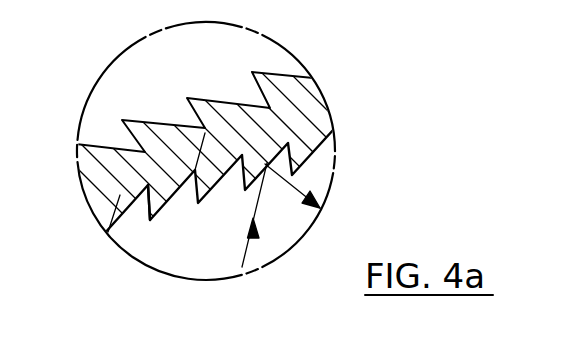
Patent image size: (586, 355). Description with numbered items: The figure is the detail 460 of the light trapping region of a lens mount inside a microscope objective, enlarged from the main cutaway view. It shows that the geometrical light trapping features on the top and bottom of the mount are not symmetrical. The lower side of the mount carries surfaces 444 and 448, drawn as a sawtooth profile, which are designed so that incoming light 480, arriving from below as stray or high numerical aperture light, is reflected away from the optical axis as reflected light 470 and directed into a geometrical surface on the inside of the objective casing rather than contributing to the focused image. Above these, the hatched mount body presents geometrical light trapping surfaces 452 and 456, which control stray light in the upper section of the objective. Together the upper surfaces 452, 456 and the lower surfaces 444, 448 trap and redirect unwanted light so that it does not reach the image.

The surface 444 is at (148, 212).
The surface 448 is at (171, 205).
The geometrical light trapping surface 452 is at (192, 120).
The geometrical light trapping surface 456 is at (215, 101).
The detail 460 is at (330, 191).
The reflected light 470 is at (298, 178).
The incoming light 480 is at (258, 210).